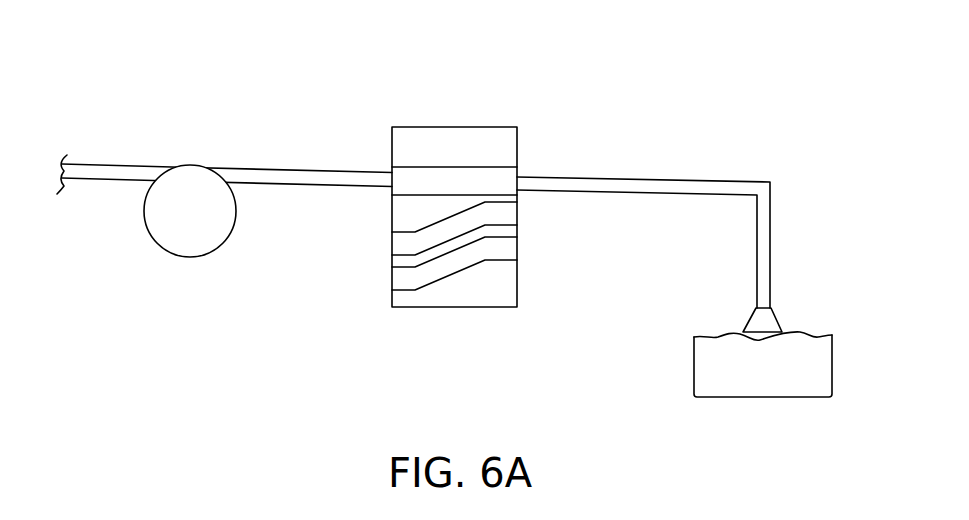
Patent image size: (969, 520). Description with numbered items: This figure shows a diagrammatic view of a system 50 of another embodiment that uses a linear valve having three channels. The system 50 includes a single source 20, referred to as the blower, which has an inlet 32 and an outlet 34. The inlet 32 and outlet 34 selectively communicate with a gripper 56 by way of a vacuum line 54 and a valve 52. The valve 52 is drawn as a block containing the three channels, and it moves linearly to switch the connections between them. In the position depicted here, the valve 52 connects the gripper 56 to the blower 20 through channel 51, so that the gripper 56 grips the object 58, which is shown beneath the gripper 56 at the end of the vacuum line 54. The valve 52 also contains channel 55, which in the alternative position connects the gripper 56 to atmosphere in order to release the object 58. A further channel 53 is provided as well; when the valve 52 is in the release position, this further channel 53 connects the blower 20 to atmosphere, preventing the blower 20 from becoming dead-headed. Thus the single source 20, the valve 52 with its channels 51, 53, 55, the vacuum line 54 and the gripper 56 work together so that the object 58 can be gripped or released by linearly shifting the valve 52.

The system 50 is at (594, 58).
The outlet 34 is at (120, 164).
The inlet 32 is at (288, 170).
The single source 20 is at (190, 259).
The valve 52 is at (455, 127).
The channel 51 is at (498, 168).
The further channel 53 is at (500, 225).
The channel 55 is at (500, 260).
The vacuum line 54 is at (643, 177).
The gripper 56 is at (773, 317).
The object 58 is at (834, 362).